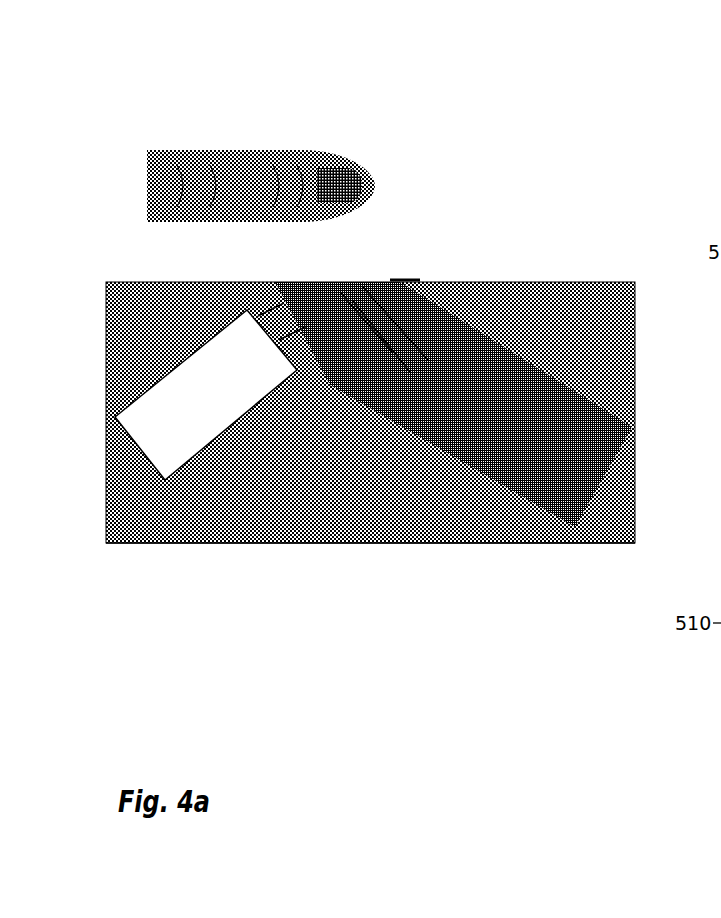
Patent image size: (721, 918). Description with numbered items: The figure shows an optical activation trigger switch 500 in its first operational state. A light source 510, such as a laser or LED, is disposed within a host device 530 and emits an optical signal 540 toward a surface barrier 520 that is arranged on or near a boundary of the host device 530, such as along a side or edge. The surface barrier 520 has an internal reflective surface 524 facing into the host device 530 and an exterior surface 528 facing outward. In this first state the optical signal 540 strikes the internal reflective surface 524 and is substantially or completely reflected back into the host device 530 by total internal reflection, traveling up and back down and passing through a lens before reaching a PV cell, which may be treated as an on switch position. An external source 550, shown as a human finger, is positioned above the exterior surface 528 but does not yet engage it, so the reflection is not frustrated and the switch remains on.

The optical activation trigger switch 500 is at (435, 147).
The light source 510 is at (152, 473).
The surface barrier 520 is at (578, 279).
The internal reflective surface 524 is at (535, 292).
The exterior surface 528 is at (480, 262).
The host device 530 is at (483, 540).
The optical signal 540 is at (272, 322).
The external source 550 is at (233, 150).